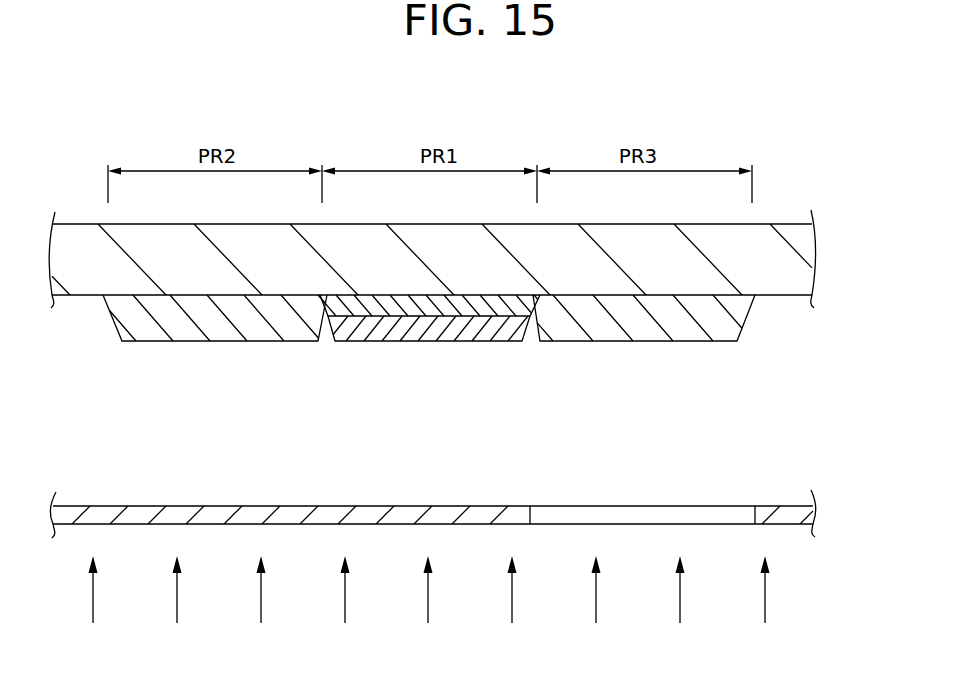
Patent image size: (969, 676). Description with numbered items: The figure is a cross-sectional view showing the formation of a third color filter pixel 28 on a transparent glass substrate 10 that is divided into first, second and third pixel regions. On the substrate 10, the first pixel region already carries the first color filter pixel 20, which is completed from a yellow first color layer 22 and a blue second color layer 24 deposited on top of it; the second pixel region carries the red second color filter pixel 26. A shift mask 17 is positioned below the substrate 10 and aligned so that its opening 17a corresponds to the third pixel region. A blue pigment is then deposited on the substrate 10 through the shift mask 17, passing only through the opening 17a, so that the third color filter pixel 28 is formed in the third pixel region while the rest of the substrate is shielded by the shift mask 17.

The substrate 10 is at (802, 272).
The second color filter pixel 26 is at (220, 327).
The third color filter pixel 28 is at (635, 325).
The first color filter pixel 20 is at (430, 367).
The first color layer 22 is at (445, 312).
The second color layer 24 is at (397, 325).
The shift mask 17 is at (813, 512).
The opening 17a is at (650, 518).